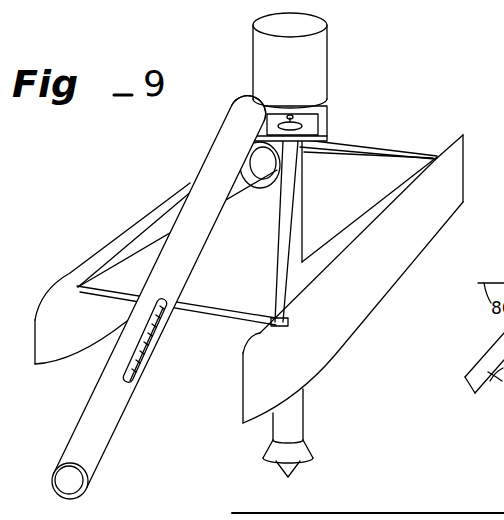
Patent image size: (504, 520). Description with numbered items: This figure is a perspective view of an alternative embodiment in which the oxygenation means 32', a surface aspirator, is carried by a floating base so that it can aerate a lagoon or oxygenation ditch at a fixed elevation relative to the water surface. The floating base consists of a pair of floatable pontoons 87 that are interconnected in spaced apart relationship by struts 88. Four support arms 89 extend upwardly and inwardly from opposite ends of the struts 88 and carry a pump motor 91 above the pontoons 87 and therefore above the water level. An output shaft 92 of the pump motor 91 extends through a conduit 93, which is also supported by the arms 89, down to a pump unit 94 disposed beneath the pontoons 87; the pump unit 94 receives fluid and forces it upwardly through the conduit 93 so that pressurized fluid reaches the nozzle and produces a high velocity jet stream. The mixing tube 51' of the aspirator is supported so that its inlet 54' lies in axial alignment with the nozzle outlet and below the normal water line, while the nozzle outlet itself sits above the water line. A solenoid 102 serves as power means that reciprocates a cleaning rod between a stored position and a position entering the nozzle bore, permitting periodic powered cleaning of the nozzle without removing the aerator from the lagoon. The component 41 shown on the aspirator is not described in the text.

The solenoid 102 is at (246, 104).
The pump motor 91 is at (318, 45).
The output shaft 92 is at (312, 118).
The support arms 89 is at (133, 246).
The struts 88 is at (211, 309).
The tube 41 is at (220, 166).
The oxygenation means 32' is at (154, 205).
The floatable pontoons 87 is at (62, 355).
The inlet 54' is at (153, 353).
The mixing tube 51' is at (102, 470).
The conduit 93 is at (302, 422).
The pump unit 94 is at (312, 448).